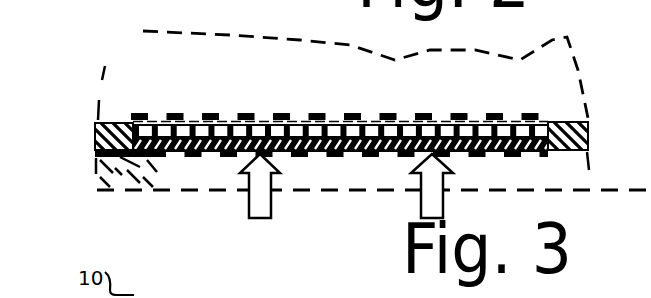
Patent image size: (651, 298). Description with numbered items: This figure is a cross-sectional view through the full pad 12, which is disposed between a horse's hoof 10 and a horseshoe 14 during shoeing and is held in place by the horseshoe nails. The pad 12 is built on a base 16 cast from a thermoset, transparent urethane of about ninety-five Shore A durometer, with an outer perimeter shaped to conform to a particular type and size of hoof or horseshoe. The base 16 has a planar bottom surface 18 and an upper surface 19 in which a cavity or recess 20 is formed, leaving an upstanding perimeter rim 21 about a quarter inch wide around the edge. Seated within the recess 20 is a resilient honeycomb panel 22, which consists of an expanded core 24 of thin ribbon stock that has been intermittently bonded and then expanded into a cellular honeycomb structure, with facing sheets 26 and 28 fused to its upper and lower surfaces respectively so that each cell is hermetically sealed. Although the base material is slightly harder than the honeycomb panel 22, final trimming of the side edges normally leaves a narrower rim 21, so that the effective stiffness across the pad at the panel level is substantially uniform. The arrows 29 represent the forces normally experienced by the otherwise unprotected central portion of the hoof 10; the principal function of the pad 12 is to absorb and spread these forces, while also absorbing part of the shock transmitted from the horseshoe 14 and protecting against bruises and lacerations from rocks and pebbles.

The horse's hoof 10 is at (108, 50).
The full pad 12 is at (92, 153).
The horseshoe 14 is at (122, 190).
The base 16 is at (223, 152).
The planar bottom surface 18 is at (154, 159).
The upper surface 19 is at (115, 123).
The cavity or recess 20 is at (147, 118).
The perimeter rim 21 is at (96, 131).
The resilient honeycomb panel 22 is at (218, 121).
The expanded core 24 is at (327, 118).
The upper facing sheet 26 is at (407, 116).
The lower facing sheet 28 is at (475, 114).
The arrows 29 is at (421, 204).